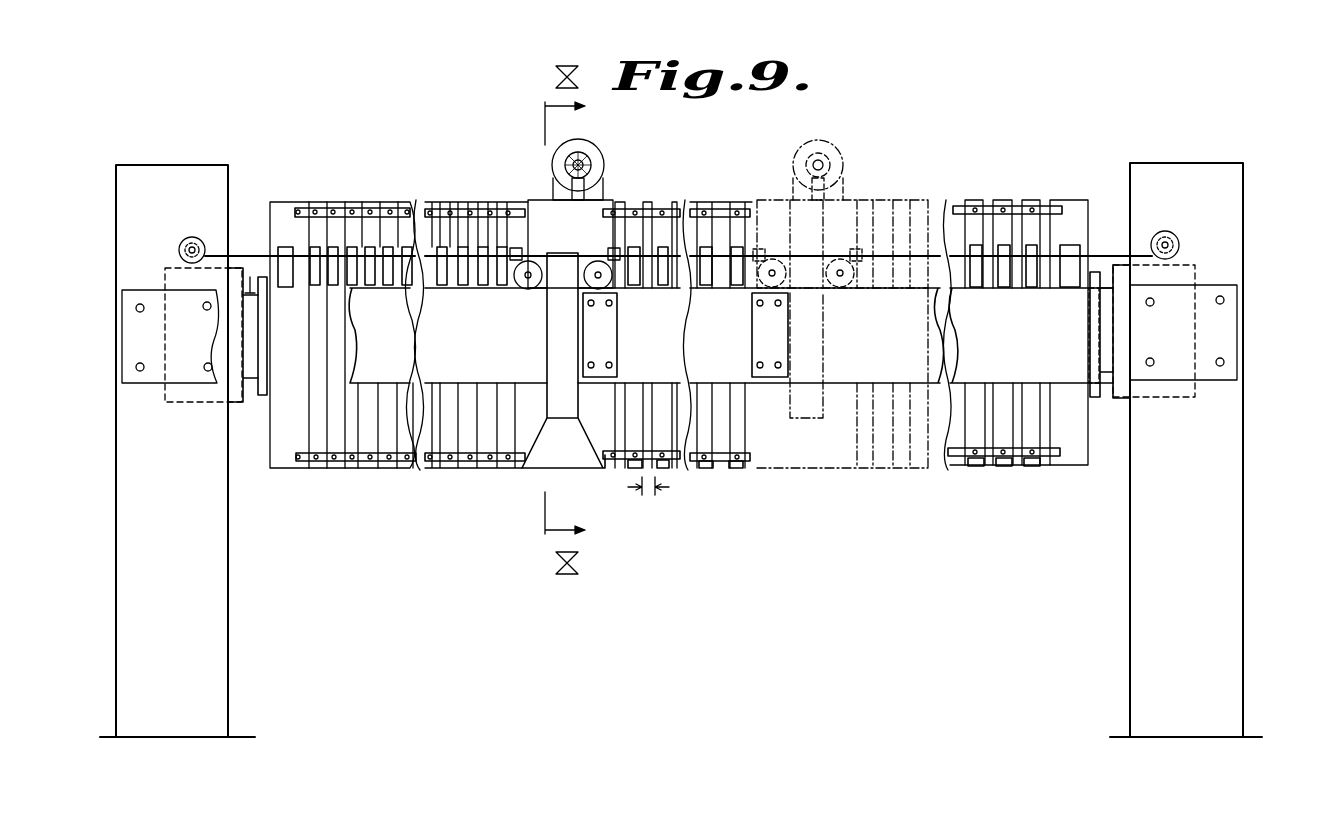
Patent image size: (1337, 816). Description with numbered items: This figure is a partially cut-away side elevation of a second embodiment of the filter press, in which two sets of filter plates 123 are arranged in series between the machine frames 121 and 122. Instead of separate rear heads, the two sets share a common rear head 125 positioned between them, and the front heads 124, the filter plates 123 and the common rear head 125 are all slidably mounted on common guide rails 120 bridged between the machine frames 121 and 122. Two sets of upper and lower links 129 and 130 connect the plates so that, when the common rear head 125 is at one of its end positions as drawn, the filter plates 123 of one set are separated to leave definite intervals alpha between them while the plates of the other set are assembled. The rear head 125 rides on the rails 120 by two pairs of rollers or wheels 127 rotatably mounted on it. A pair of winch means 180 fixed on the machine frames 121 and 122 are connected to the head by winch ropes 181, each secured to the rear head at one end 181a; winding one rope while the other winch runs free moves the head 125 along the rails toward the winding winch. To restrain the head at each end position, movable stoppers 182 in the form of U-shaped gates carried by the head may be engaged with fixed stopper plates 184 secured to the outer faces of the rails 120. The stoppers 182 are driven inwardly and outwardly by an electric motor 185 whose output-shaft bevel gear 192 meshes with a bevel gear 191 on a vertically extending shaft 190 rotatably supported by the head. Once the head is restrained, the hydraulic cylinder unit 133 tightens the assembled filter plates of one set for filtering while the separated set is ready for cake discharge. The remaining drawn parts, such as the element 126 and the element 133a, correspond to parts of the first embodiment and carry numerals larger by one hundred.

The guide rails 120 is at (858, 360).
The machine frame 121 is at (215, 575).
The machine frame 122 is at (1168, 592).
The filter plates 123 is at (333, 225).
The front heads 124 is at (285, 440).
The common rear head 125 is at (538, 220).
The pins 126 is at (285, 288).
The rollers or wheels 127 is at (525, 285).
The upper links 129 is at (390, 230).
The lower links 130 is at (402, 465).
The hydraulic cylinder unit 133 is at (236, 400).
The bracket 133a is at (250, 290).
The winch means 180 is at (192, 237).
The winch ropes 181 is at (276, 240).
The end of winch rope 181a is at (514, 252).
The movable stoppers 182 is at (556, 405).
The stopper plates 184 is at (770, 365).
The electric motor 185 is at (600, 185).
The vertically extending shaft 190 is at (612, 200).
The bevel gear 191 is at (585, 192).
The bevel gear 192 is at (592, 170).
The intervals alpha is at (649, 497).